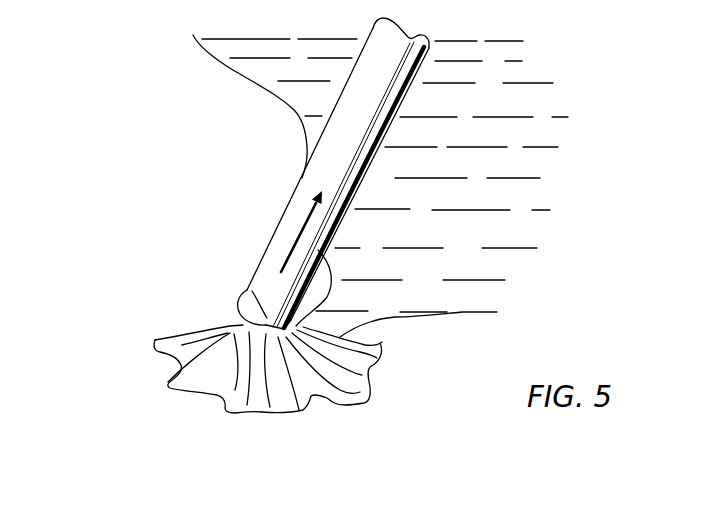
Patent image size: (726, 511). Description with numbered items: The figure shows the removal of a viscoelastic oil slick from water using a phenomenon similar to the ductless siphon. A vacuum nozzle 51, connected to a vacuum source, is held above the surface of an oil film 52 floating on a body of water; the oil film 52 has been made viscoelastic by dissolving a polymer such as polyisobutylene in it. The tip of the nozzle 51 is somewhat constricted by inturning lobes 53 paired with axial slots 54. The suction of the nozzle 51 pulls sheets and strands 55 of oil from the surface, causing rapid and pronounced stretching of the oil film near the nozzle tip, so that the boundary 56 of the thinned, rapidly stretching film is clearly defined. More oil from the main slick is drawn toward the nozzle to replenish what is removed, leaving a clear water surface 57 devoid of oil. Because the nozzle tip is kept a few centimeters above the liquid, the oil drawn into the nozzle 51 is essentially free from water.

The vacuum nozzle 51 is at (407, 93).
The oil film 52 is at (203, 180).
The inturning lobes 53 is at (246, 295).
The axial slots 54 is at (236, 328).
The sheets and strands 55 is at (289, 353).
The boundary 56 is at (369, 400).
The clear water surface 57 is at (465, 240).